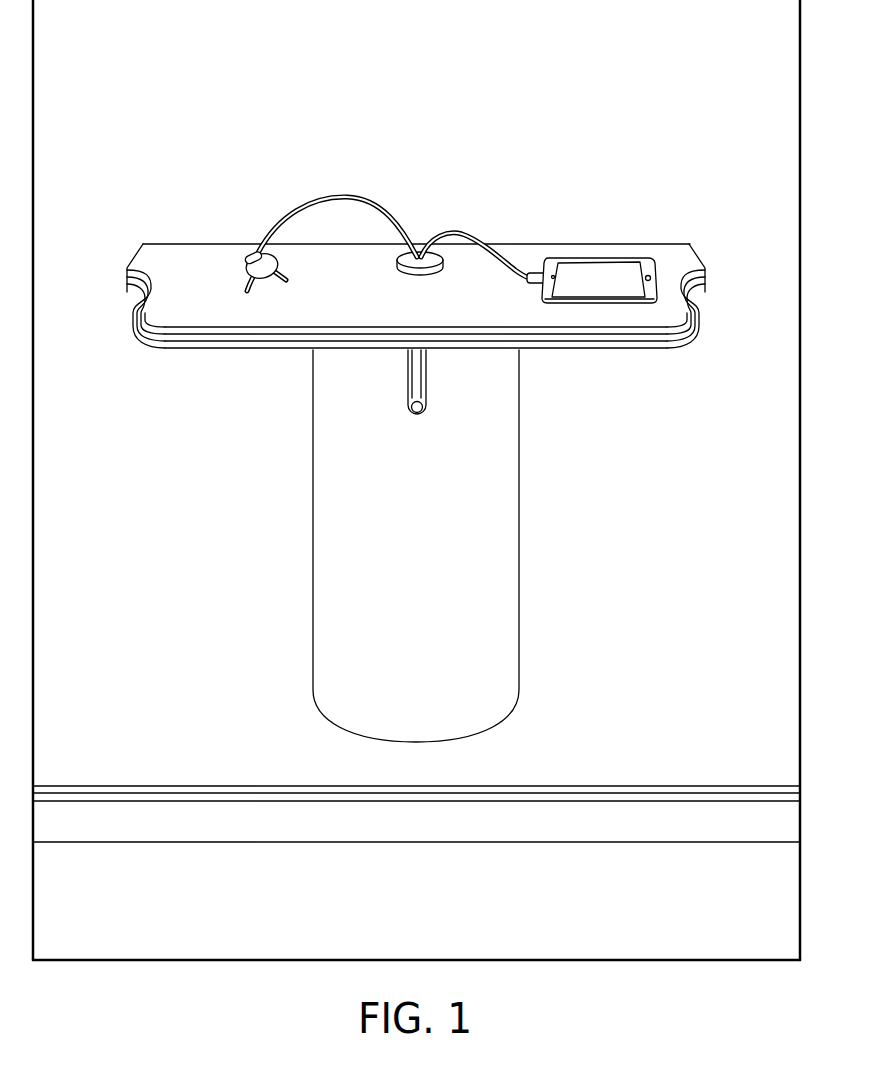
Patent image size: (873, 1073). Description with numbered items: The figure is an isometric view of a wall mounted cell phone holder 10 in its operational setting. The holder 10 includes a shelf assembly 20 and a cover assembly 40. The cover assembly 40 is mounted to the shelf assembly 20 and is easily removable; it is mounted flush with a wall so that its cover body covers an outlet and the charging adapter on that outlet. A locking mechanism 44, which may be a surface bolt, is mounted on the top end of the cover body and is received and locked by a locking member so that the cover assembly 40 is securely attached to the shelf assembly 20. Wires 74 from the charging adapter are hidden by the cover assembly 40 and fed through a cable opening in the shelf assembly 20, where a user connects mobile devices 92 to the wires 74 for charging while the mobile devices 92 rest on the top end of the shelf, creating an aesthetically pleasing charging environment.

The wall mounted cell phone holder 10 is at (197, 176).
The shelf assembly 20 is at (163, 252).
The cover assembly 40 is at (343, 611).
The locking mechanism 44 is at (428, 386).
The wires 74 is at (346, 196).
The mobile devices 92 is at (602, 267).